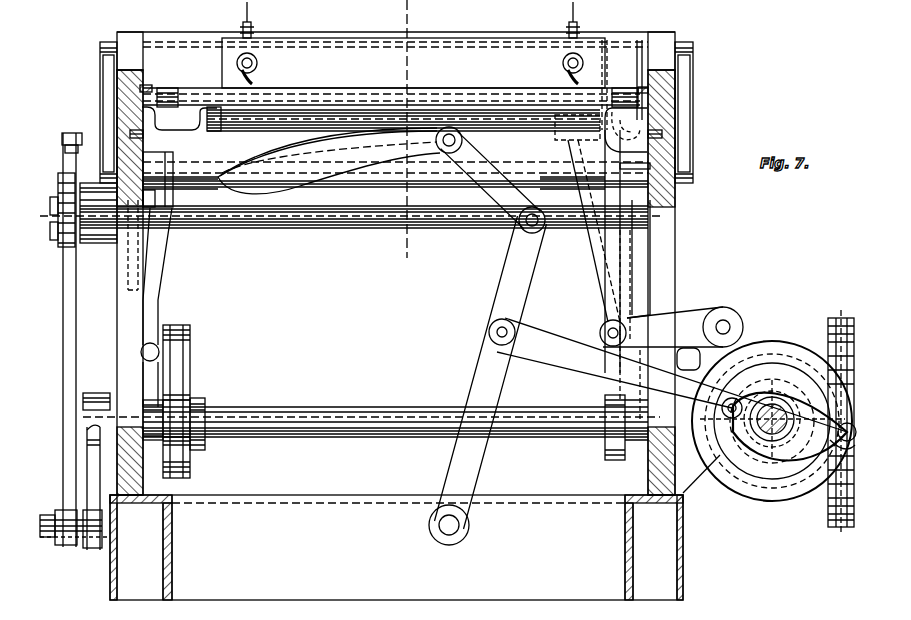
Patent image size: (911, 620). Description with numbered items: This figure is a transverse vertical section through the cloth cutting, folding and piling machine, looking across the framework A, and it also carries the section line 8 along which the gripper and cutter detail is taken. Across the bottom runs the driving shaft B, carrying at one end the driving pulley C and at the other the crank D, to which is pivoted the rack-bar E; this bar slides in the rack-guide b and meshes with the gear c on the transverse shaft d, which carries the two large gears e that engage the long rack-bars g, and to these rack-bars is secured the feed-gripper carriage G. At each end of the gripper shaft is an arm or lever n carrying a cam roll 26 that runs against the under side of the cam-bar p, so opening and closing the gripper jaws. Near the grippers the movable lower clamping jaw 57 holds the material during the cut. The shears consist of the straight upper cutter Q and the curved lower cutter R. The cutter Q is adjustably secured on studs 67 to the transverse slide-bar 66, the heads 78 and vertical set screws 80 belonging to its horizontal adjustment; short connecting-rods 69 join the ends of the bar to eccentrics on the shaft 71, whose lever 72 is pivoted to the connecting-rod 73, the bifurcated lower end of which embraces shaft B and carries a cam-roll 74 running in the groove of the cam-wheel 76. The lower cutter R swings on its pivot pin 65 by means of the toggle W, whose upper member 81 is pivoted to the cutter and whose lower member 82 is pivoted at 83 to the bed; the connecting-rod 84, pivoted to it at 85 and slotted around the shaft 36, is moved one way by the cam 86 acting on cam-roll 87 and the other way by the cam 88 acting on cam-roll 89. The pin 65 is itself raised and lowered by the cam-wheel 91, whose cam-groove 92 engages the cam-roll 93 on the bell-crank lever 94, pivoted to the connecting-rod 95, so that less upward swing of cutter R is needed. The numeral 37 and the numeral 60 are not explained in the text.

The section line 8 is at (404, 135).
The cam roll 26 is at (135, 102).
The horizontal shaft 36 is at (748, 455).
The bracket 37 is at (690, 483).
The lower clamping jaw 57 is at (246, 131).
The vertical rod 60 is at (590, 238).
The pivot pin 65 is at (678, 118).
The slide-bar 66 is at (400, 63).
The studs 67 is at (258, 63).
The connecting-rods 69 is at (103, 100).
The shaft 71 is at (355, 185).
The arm or lever 72 is at (168, 168).
The connecting-rod 73 is at (165, 250).
The cam-roll 74 is at (190, 372).
The cam-wheel 76 is at (188, 346).
The heads 78 is at (252, 55).
The set screws 80 is at (243, 26).
The upper toggle member 81 is at (490, 180).
The lower toggle member 82 is at (491, 372).
The pivot 83 is at (452, 520).
The connecting-rod 84 is at (672, 375).
The pivot 85 is at (490, 332).
The cam 86 is at (790, 362).
The cam-roll 87 is at (737, 398).
The cam 88 is at (790, 465).
The cam-roll 89 is at (815, 470).
The cam-wheel 91 is at (800, 355).
The cam-groove 92 is at (810, 360).
The cam-roll 93 is at (705, 458).
The bell-crank lever 94 is at (700, 318).
The connecting-rod 95 is at (597, 243).
The framework A is at (128, 322).
The driving shaft B is at (320, 410).
The driving pulley C is at (842, 527).
The crank D is at (90, 462).
The rack-bar E is at (62, 325).
The feed-gripper carriage G is at (368, 92).
The upper cutter Q is at (396, 60).
The lower cutter R is at (329, 161).
The toggle W is at (483, 267).
The rack-guide b is at (74, 133).
The gear c is at (58, 186).
The transverse shaft d is at (255, 229).
The large gears e is at (140, 272).
The rack-bars g is at (148, 135).
The arm or lever n is at (168, 88).
The cam-bar p is at (140, 88).